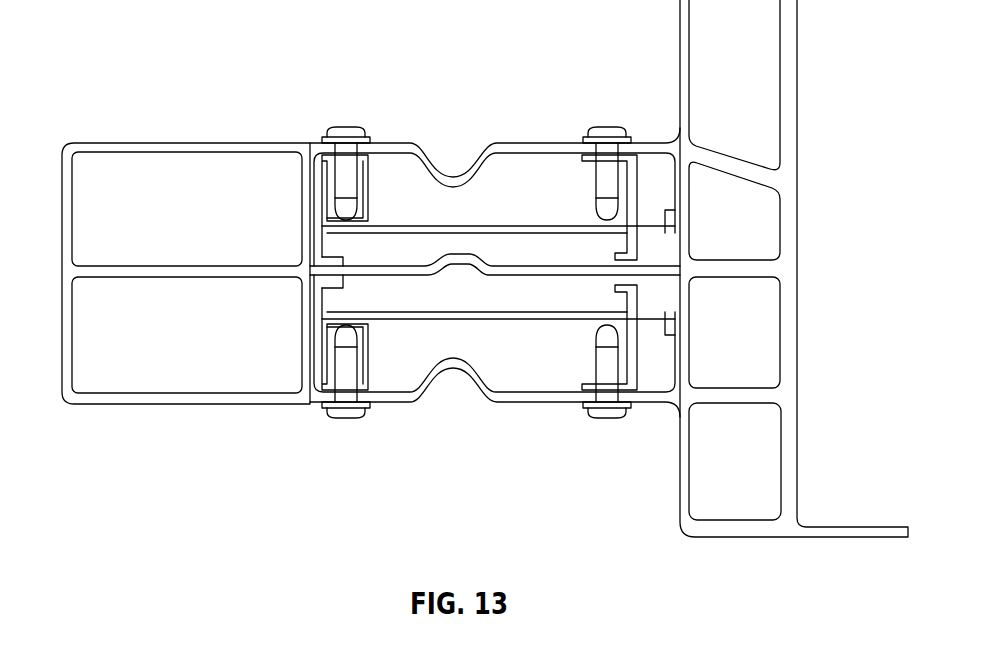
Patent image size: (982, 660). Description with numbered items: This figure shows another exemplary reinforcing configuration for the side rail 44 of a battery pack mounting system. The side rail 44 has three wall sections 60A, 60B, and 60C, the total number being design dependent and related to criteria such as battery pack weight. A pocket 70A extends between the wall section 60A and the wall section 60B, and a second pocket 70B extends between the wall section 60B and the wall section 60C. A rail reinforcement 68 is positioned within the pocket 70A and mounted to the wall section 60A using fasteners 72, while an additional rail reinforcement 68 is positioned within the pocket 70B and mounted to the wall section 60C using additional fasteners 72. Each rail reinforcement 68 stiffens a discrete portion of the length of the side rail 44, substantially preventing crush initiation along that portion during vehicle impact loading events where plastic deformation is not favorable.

The side rail 44 is at (452, 116).
The wall section 60A is at (641, 146).
The wall section 60B is at (660, 266).
The wall section 60C is at (528, 400).
The rail reinforcement 68 is at (417, 210).
The pocket 70A is at (545, 176).
The pocket 70B is at (545, 372).
The fasteners 72 is at (343, 127).